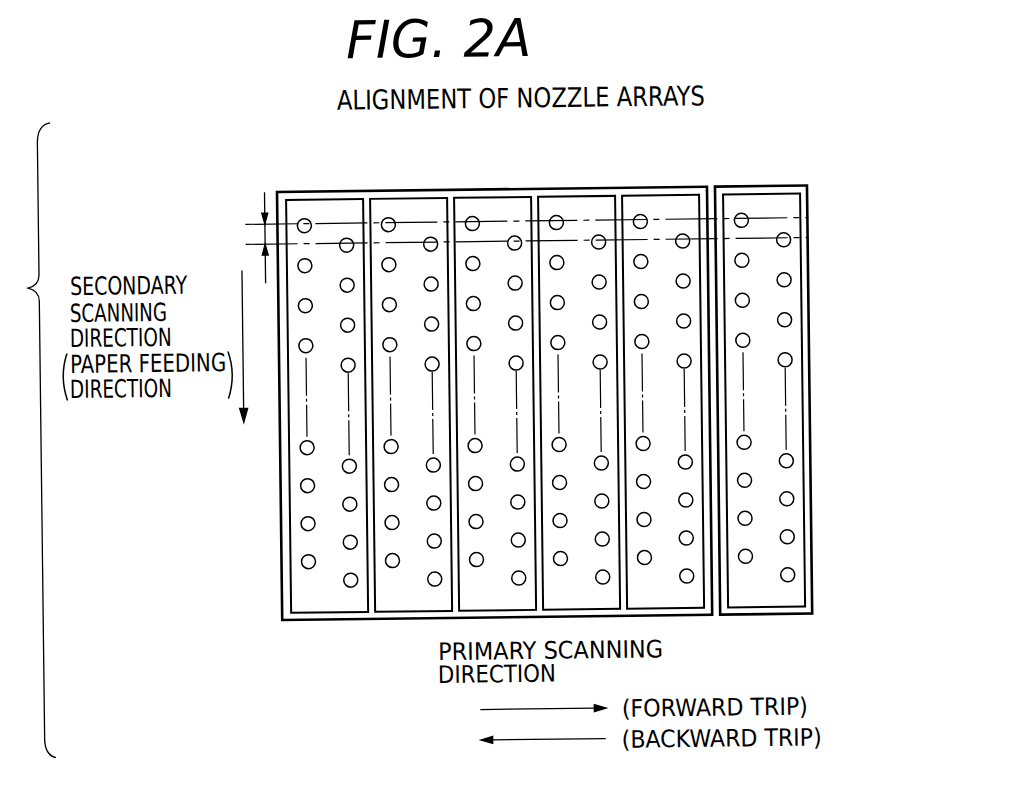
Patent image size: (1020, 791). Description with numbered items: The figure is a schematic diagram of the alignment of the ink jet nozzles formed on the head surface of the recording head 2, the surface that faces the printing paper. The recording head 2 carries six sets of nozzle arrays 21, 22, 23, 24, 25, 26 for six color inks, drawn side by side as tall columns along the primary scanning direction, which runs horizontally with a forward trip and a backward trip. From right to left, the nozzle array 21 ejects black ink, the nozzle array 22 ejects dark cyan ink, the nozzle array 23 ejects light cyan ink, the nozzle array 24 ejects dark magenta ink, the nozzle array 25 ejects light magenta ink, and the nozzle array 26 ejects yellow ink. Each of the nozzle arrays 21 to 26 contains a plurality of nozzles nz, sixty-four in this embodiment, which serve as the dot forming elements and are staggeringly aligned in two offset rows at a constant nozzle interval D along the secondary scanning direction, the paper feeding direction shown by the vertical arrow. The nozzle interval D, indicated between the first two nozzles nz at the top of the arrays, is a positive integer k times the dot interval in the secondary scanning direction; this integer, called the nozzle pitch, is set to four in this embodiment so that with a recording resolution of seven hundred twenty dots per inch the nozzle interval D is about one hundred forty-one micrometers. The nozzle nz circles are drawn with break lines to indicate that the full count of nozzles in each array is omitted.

The recording head 2 is at (815, 354).
The nozzle array 21 is at (765, 200).
The nozzle array 22 is at (665, 200).
The nozzle array 23 is at (580, 200).
The nozzle array 24 is at (495, 200).
The nozzle array 25 is at (410, 200).
The nozzle array 26 is at (325, 200).
The nozzle nz is at (790, 327).
The nozzle interval D is at (262, 236).